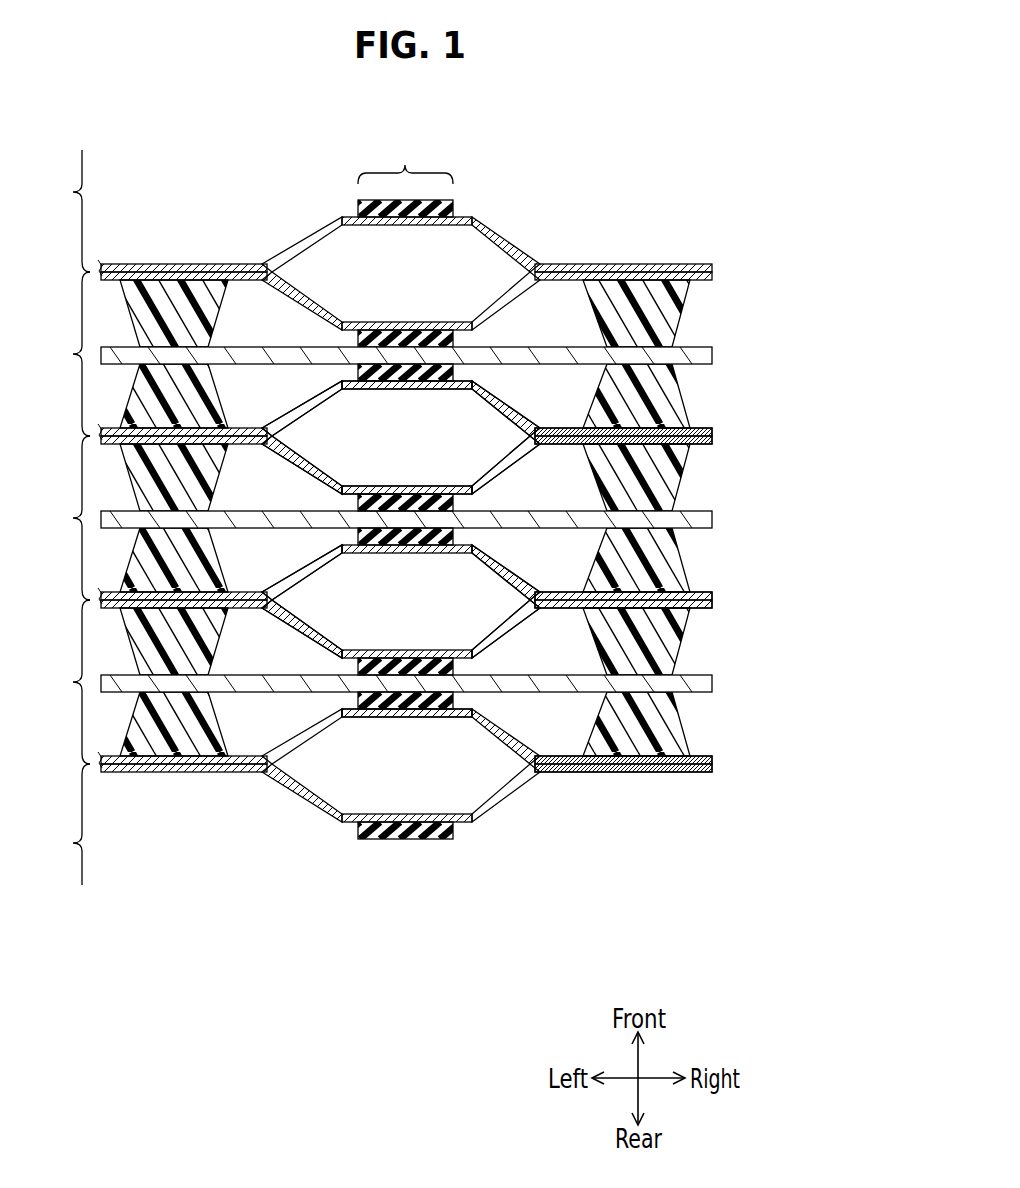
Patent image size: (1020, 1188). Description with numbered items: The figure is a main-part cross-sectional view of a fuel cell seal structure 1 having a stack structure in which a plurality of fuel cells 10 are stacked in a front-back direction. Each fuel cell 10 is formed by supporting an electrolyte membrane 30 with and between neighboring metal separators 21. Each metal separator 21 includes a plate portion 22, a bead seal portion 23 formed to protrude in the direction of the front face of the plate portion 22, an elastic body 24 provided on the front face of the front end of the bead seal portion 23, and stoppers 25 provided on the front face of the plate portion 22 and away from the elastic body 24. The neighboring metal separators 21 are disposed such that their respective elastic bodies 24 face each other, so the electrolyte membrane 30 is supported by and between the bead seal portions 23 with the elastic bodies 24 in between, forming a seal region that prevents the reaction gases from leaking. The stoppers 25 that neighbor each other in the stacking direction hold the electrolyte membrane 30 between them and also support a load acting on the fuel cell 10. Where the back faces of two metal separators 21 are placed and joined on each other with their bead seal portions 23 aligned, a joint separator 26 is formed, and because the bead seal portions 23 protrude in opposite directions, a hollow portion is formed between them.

The fuel cell seal structure 1 is at (518, 132).
The fuel cell 10 is at (361, 517).
The metal separator 21 is at (786, 316).
The plate portion 22 is at (455, 372).
The bead seal portion 23 is at (474, 385).
The elastic body 24 is at (505, 408).
The stopper 25 is at (570, 432).
The joint separator 26 is at (718, 200).
The electrolyte membrane 30 is at (714, 355).